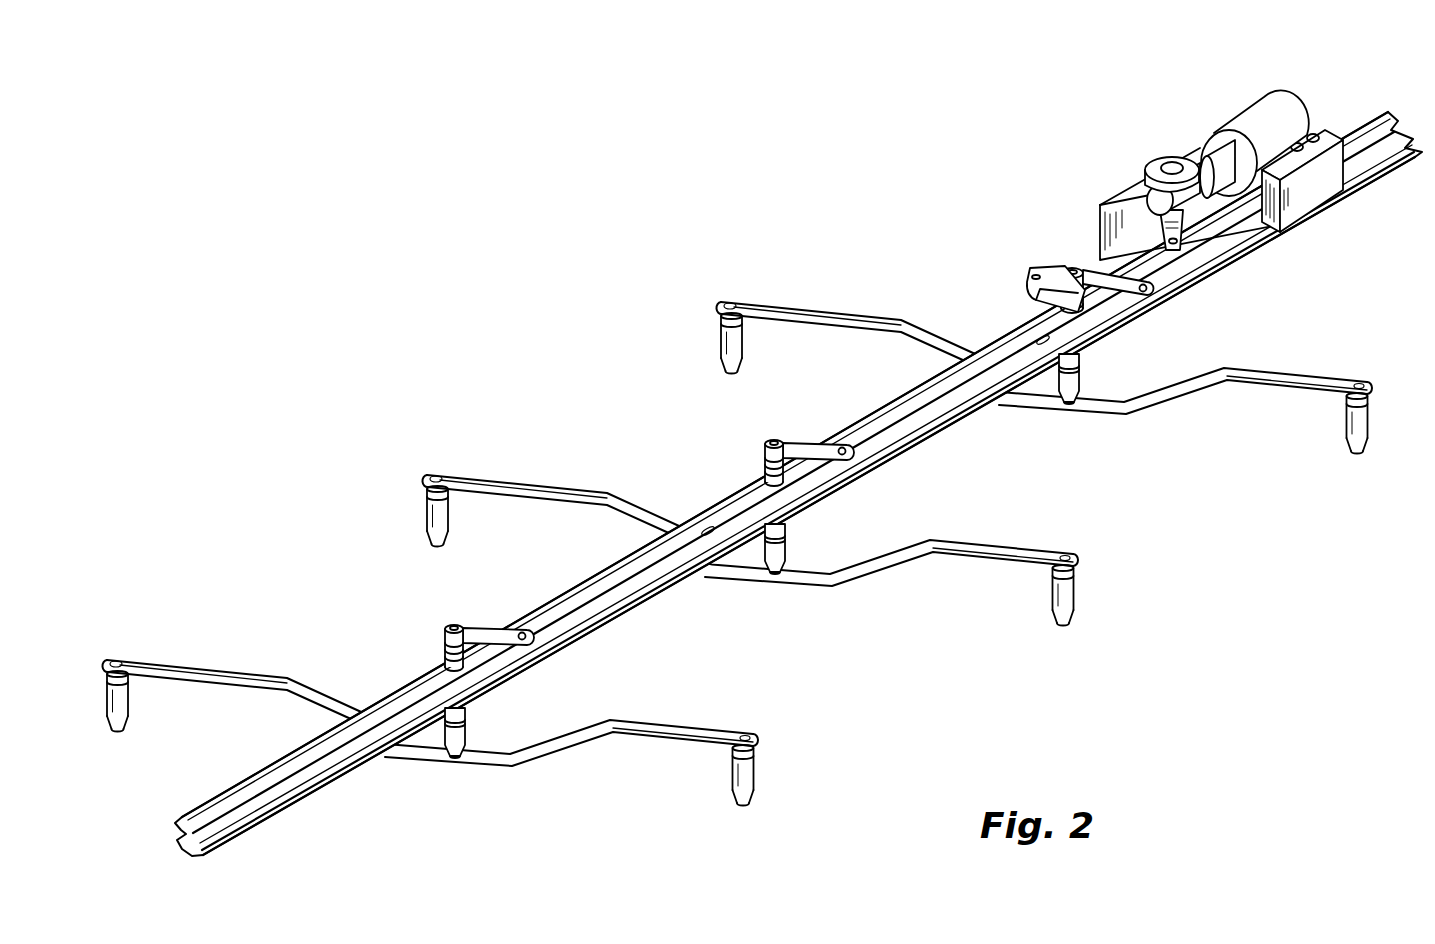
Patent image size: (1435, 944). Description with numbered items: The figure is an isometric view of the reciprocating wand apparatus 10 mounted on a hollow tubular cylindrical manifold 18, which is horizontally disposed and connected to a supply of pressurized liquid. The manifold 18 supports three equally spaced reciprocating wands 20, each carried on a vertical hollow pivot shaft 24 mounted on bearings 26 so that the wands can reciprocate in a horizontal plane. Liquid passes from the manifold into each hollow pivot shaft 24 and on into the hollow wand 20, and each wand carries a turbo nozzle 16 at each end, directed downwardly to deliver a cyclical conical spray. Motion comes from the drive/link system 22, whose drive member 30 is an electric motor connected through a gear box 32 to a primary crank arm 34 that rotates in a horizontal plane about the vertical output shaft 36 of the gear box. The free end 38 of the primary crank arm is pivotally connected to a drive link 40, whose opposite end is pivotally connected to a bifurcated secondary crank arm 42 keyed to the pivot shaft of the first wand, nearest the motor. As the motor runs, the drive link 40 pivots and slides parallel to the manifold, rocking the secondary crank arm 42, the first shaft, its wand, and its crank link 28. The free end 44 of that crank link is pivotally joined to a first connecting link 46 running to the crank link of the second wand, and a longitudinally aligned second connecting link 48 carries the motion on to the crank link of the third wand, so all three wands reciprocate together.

The apparatus 10 is at (612, 345).
The turbo nozzle 16 is at (731, 348).
The manifold 18 is at (798, 484).
The reciprocating wand 20 is at (1218, 368).
The drive/link system 22 is at (1090, 214).
The pivot shaft 24 is at (1058, 268).
The bearings 26 is at (1083, 372).
The crank link 28 is at (810, 453).
The drive member 30 is at (1265, 136).
The gear box 32 is at (1265, 205).
The primary crank arm 34 is at (1250, 228).
The output shaft 36 is at (1165, 165).
The free end of primary crank arm 38 is at (1190, 240).
The drive link 40 is at (1156, 213).
The bifurcated secondary crank arm 42 is at (1027, 307).
The free end of first crank link 44 is at (1160, 289).
The first connecting link 46 is at (946, 403).
The second connecting link 48 is at (630, 570).